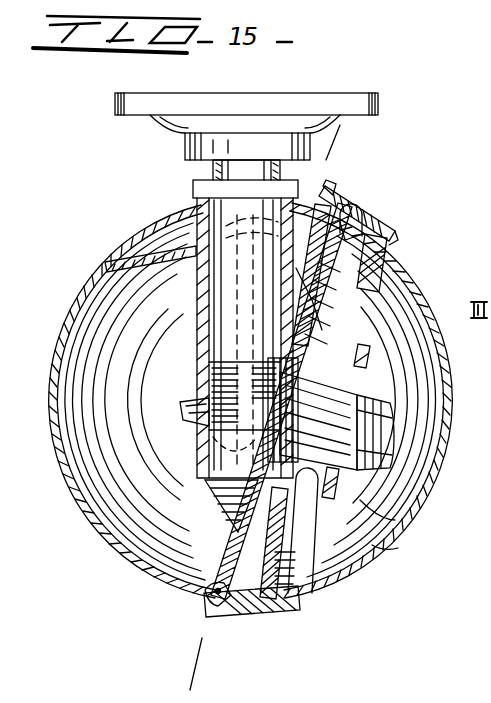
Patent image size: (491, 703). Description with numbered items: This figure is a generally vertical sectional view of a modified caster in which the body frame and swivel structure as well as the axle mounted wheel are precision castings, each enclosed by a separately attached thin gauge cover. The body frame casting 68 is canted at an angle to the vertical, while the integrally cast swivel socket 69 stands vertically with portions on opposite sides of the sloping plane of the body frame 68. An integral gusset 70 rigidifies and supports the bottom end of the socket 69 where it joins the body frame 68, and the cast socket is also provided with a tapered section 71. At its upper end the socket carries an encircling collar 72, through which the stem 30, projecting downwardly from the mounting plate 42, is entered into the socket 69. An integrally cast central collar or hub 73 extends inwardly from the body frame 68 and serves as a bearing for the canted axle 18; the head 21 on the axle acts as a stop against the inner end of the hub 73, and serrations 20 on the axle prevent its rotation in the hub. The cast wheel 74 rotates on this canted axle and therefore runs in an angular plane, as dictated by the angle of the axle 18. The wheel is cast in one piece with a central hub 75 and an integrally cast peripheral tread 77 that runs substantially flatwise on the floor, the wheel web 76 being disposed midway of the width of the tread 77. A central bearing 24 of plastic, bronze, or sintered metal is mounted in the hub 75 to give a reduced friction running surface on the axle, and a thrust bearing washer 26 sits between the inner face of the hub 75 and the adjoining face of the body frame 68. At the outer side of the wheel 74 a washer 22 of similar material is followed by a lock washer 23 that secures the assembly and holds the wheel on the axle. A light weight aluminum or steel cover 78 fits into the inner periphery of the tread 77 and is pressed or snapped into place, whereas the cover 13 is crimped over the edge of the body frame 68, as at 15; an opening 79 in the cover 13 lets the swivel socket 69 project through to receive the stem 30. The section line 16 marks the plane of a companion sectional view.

The cover 13 is at (92, 523).
The crimped edge 15 is at (326, 188).
The section line 16 is at (374, 150).
The canted axle 18 is at (455, 460).
The serrations 20 is at (205, 443).
The head 21 is at (182, 422).
The washer 22 is at (386, 553).
The lock washer 23 is at (388, 527).
The central bearing 24 is at (353, 497).
The thrust bearing washer 26 is at (312, 414).
The stem 30 is at (213, 172).
The mounting plate 42 is at (322, 93).
The body frame casting 68 is at (223, 583).
The swivel socket 69 is at (200, 327).
The gusset 70 is at (222, 504).
The tapered section 71 is at (200, 402).
The collar 72 is at (195, 188).
The hub 73 is at (236, 332).
The cast wheel 74 is at (398, 235).
The central hub 75 is at (305, 387).
The wheel web 76 is at (335, 292).
The peripheral tread 77 is at (364, 206).
The cover 78 is at (438, 328).
The opening 79 is at (200, 260).